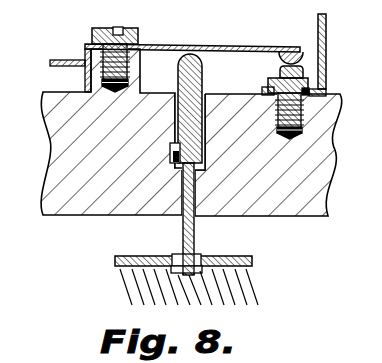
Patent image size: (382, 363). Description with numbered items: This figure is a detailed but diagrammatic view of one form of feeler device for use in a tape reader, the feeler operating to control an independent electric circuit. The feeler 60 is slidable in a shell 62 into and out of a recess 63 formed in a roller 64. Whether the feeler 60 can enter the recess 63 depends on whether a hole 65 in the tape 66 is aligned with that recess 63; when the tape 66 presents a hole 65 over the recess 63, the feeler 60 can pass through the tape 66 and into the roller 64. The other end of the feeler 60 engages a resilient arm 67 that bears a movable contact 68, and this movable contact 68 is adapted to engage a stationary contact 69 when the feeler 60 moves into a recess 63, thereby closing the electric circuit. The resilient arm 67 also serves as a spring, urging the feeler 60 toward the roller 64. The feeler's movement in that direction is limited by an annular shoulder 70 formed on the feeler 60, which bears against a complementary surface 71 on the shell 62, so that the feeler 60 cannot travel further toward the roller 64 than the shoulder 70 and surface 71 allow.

The feeler 60 is at (195, 85).
The shell 62 is at (320, 143).
The recess 63 is at (172, 276).
The roller 64 is at (228, 292).
The hole 65 is at (199, 260).
The tape 66 is at (240, 257).
The resilient arm 67 is at (243, 33).
The movable contact 68 is at (294, 50).
The stationary contact 69 is at (303, 72).
The annular shoulder 70 is at (176, 153).
The complementary surface 71 is at (173, 168).